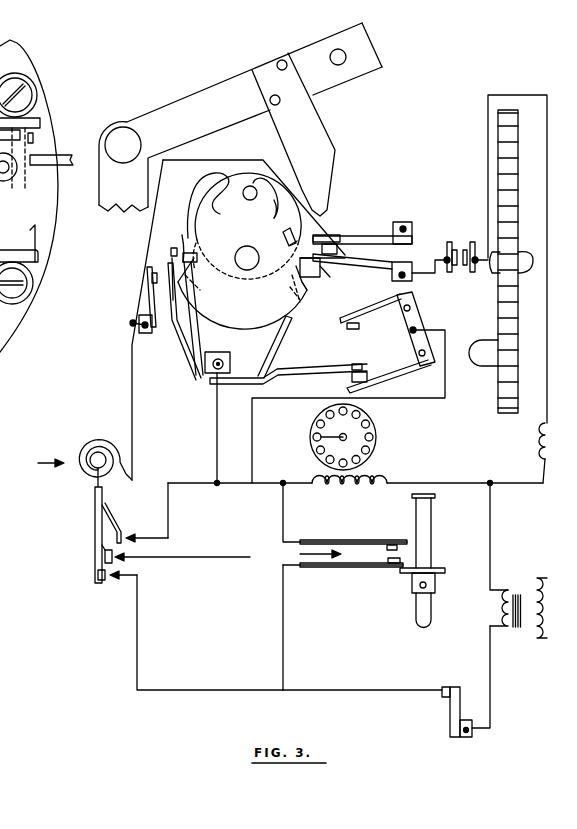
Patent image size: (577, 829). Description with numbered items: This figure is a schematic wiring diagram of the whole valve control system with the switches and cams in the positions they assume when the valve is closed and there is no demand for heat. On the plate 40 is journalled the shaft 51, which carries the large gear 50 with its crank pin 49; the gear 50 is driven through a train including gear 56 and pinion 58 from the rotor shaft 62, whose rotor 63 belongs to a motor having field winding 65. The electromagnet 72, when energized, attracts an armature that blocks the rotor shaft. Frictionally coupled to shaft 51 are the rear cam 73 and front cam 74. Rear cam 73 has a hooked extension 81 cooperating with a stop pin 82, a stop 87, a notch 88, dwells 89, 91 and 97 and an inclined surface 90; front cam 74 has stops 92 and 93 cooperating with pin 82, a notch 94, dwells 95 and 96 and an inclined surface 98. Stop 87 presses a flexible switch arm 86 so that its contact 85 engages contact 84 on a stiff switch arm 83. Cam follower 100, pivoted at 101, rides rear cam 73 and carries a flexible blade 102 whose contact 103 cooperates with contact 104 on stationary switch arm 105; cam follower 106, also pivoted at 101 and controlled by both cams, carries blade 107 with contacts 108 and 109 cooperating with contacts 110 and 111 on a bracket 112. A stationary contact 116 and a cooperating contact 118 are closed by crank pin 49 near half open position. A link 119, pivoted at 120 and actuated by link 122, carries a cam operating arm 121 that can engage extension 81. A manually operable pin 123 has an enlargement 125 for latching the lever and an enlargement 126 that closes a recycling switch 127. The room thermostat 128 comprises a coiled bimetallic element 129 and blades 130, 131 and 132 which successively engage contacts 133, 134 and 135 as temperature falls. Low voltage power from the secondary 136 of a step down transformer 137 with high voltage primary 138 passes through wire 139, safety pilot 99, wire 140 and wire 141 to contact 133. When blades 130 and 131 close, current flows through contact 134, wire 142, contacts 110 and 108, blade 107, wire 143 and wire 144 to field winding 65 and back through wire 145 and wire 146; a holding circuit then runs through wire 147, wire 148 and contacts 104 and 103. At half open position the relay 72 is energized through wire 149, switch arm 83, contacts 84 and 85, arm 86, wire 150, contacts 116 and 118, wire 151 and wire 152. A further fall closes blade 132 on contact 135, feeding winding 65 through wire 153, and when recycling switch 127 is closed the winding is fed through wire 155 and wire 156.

The plate 40 is at (12, 250).
The crank pin 49 is at (481, 338).
The large gear 50 is at (496, 390).
The shaft 51 is at (249, 270).
The gear 56 is at (0, 221).
The pinion 58 is at (8, 203).
The motor rotor shaft 62 is at (318, 433).
The rotor 63 is at (376, 425).
The field winding 65 is at (370, 476).
The electromagnet 72 is at (530, 444).
The rear cam 73 is at (297, 246).
The front cam 74 is at (188, 232).
The hooked extension 81 is at (222, 168).
The stop pin 82 is at (247, 186).
The switch arm 83 is at (345, 237).
The contact 84 is at (340, 237).
The contact 85 is at (337, 251).
The switch arm 86 is at (382, 261).
The stop 87 is at (318, 274).
The notch 88 is at (296, 306).
The dwell 89 is at (254, 322).
The inclined surface 90 is at (198, 276).
The dwell 91 is at (198, 248).
The stop 92 is at (261, 204).
The stop 93 is at (200, 288).
The notch 94 is at (287, 236).
The dwell 95 is at (279, 205).
The dwell 96 is at (230, 330).
The dwell 97 is at (292, 290).
The inclined surface 98 is at (310, 289).
The safety pilot 99 is at (447, 698).
The cam follower 100 is at (190, 262).
The pivot 101 is at (226, 360).
The flexible blade 102 is at (174, 322).
The contact 103 is at (190, 250).
The contact 104 is at (153, 260).
The switch arm 105 is at (157, 305).
The cam follower 106 is at (280, 344).
The flexible blade 107 is at (315, 375).
The contact 108 is at (355, 380).
The contact 109 is at (355, 364).
The contact 110 is at (370, 372).
The contact 111 is at (357, 323).
The bracket 112 is at (418, 318).
The stationary contact 116 is at (460, 242).
The contact 118 is at (467, 274).
The link 119 is at (222, 120).
The pivot 120 is at (352, 52).
The cam operating arm 121 is at (321, 145).
The link 122 is at (110, 207).
The manually operable pin 123 is at (432, 618).
The enlargement 125 is at (436, 497).
The enlargement 126 is at (441, 566).
The recycling switch 127 is at (306, 554).
The room thermostat 128 is at (54, 461).
The coiled bimetallic element 129 is at (82, 440).
The blade 130 is at (100, 583).
The blade 131 is at (106, 548).
The blade 132 is at (120, 536).
The contact 133 is at (110, 580).
The contact 134 is at (124, 559).
The contact 135 is at (132, 541).
The low voltage secondary 136 is at (498, 612).
The step down transformer 137 is at (516, 584).
The high voltage primary 138 is at (547, 578).
The wire 139 is at (489, 680).
The wire 140 is at (356, 693).
The wire 141 is at (240, 692).
The wire 142 is at (272, 398).
The wire 143 is at (217, 428).
The wire 144 is at (266, 482).
The wire 145 is at (408, 482).
The wire 146 is at (490, 545).
The wire 147 is at (133, 425).
The wire 148 is at (139, 327).
The wire 149 is at (184, 164).
The wire 150 is at (424, 276).
The wire 151 is at (544, 230).
The wire 152 is at (521, 487).
The wire 153 is at (134, 536).
The wire 155 is at (284, 638).
The wire 156 is at (287, 512).